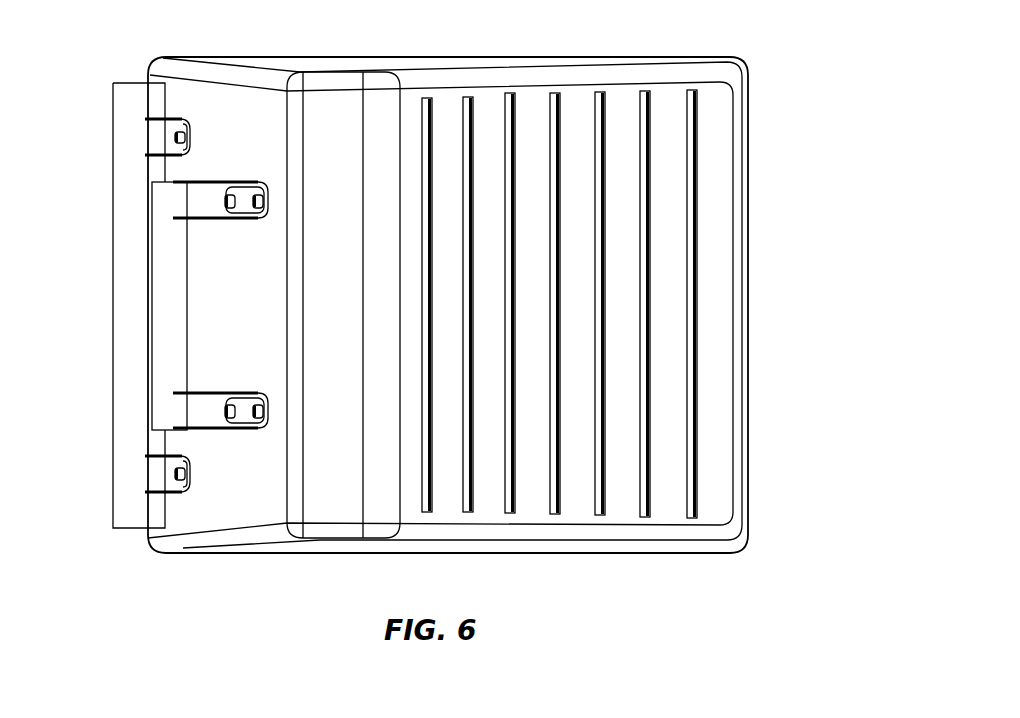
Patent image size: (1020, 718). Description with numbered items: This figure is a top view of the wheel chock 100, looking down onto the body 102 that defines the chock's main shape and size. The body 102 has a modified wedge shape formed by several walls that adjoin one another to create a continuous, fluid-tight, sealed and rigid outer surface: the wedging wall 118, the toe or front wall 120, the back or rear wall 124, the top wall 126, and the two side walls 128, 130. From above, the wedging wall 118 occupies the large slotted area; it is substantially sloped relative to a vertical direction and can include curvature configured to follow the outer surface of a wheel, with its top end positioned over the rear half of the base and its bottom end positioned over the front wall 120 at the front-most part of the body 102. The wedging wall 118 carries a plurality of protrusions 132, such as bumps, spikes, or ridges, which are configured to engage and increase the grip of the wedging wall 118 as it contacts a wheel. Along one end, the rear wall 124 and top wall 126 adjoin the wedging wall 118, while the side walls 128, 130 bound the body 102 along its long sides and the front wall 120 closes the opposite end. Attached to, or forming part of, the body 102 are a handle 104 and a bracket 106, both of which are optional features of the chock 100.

The wheel chock 100 is at (438, 304).
The body 102 is at (490, 304).
The handle 104 is at (178, 306).
The bracket 106 is at (118, 500).
The wedging wall 118 is at (441, 307).
The front wall 120 is at (748, 172).
The rear wall 124 is at (228, 110).
The top wall 126 is at (371, 273).
The side wall 128 is at (380, 548).
The side wall 130 is at (397, 63).
The protrusions 132 is at (640, 500).